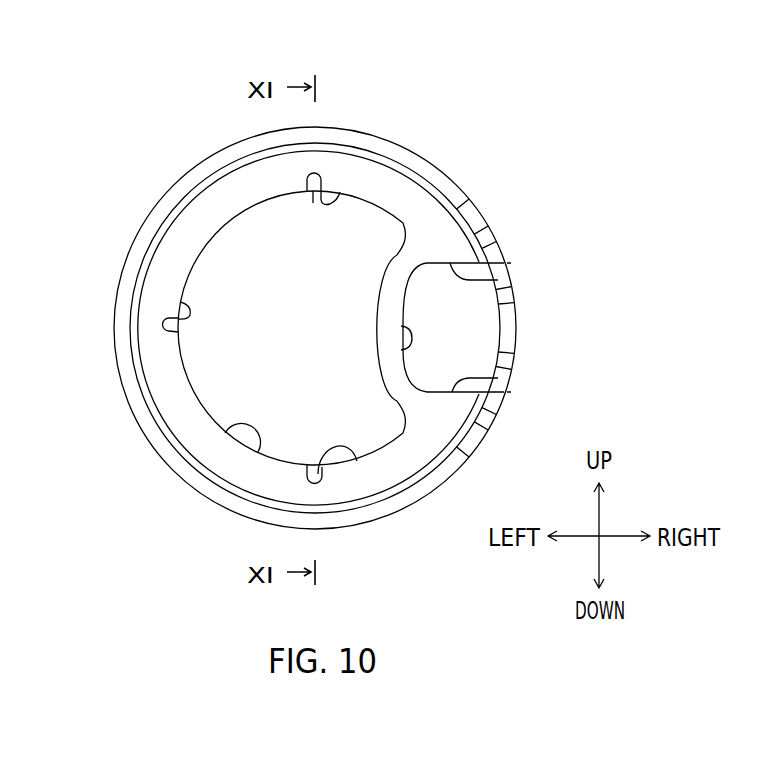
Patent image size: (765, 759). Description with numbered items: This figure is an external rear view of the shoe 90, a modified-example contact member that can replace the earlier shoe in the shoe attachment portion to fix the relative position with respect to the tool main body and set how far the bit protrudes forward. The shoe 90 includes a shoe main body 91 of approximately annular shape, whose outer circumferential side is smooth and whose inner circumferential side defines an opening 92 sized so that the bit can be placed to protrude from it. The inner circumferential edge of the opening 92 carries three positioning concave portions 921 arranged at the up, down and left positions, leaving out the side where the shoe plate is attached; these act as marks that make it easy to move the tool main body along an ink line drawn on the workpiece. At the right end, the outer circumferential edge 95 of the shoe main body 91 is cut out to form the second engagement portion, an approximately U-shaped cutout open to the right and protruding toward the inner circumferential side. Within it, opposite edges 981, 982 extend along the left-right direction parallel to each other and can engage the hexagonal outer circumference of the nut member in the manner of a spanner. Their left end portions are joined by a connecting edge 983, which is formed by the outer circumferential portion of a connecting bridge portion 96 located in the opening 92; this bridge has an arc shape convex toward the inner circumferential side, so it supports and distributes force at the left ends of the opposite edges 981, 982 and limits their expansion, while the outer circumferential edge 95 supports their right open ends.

The shoe 90 is at (420, 120).
The shoe main body 91 is at (197, 170).
The opening 92 is at (220, 437).
The positioning concave portion 921 is at (340, 192).
The outer circumferential edge 95 is at (410, 492).
The connecting bridge portion 96 is at (388, 302).
The opposite edge 981 is at (500, 277).
The opposite edge 982 is at (500, 379).
The connecting edge 983 is at (400, 327).